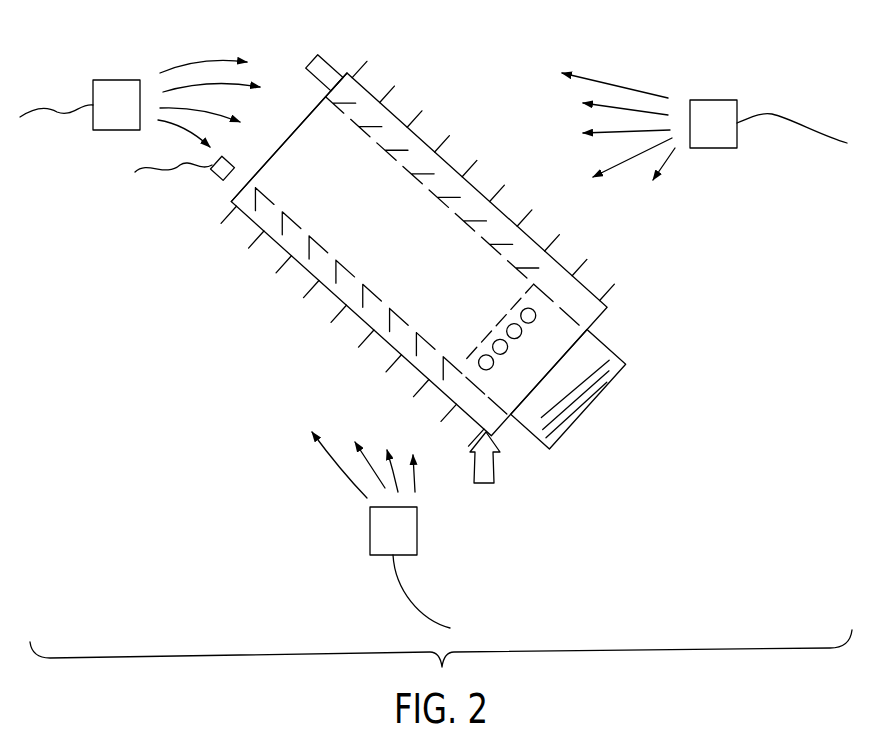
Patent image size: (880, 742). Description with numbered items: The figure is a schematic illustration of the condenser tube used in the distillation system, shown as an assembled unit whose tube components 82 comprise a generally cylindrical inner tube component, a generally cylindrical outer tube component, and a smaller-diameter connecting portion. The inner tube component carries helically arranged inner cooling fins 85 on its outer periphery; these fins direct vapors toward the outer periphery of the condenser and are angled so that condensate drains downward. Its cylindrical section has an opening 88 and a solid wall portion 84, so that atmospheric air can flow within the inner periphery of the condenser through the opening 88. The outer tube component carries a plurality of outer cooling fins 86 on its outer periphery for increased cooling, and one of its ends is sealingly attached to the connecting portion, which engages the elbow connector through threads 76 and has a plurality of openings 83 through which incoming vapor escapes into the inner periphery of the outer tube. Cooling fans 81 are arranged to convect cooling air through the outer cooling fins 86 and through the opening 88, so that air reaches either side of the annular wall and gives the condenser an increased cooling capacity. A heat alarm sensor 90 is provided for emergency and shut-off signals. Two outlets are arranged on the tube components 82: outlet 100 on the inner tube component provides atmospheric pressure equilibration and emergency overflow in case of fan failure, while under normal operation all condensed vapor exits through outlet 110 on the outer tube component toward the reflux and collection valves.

The threads 76 is at (573, 410).
The cooling fans 81 is at (107, 117).
The tube component 82 is at (607, 308).
The openings 83 is at (507, 350).
The solid wall portion 84 is at (498, 323).
The inner cooling fins 85 is at (323, 247).
The outer cooling fins 86 is at (449, 139).
The opening 88 is at (290, 135).
The heat alarm sensor 90 is at (211, 176).
The outlet 100 is at (333, 60).
The outlet 110 is at (495, 472).